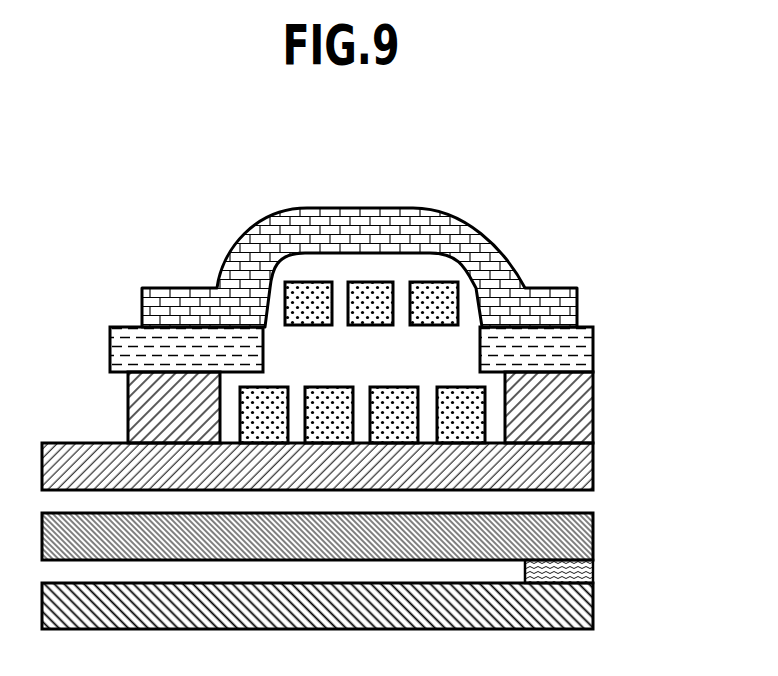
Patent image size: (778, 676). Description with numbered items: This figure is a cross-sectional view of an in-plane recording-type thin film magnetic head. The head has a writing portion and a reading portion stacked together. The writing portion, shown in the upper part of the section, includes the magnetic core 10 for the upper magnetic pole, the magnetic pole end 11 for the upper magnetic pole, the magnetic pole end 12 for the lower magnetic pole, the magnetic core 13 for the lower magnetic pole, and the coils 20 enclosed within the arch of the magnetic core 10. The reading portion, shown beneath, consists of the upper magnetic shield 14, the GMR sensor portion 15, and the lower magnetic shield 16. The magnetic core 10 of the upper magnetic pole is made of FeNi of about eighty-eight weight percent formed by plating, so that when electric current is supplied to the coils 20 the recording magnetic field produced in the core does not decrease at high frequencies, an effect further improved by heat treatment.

The coils 20 is at (438, 292).
The magnetic core for upper magnetic pole 10 is at (548, 300).
The magnetic pole end for upper magnetic pole 11 is at (558, 355).
The magnetic pole end for lower magnetic pole 12 is at (560, 418).
The magnetic core for lower magnetic pole 13 is at (560, 468).
The upper magnetic shield 14 is at (560, 522).
The GMR sensor portion 15 is at (560, 570).
The lower magnetic shield 16 is at (560, 618).